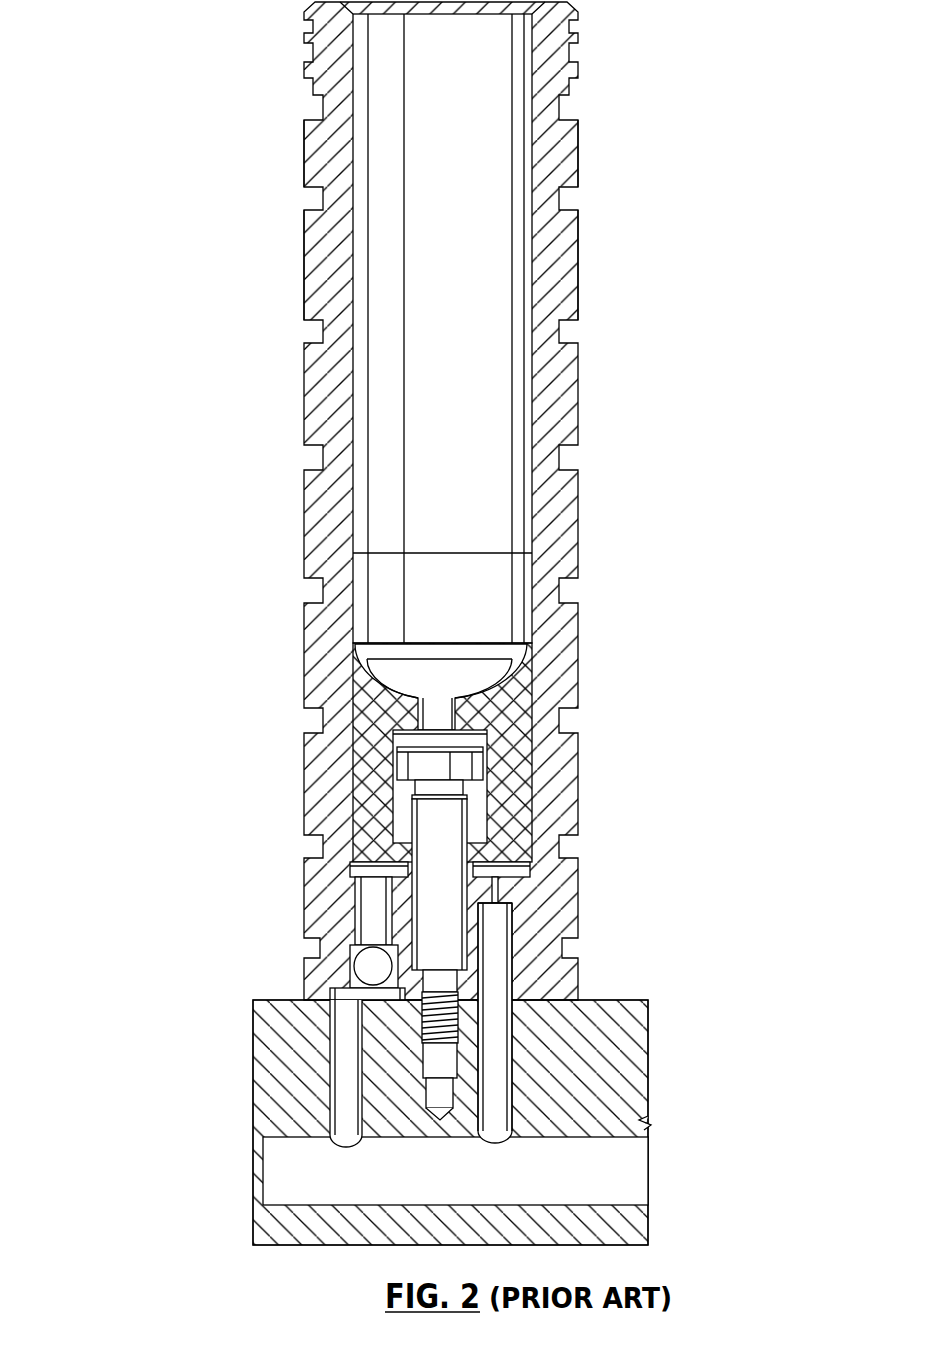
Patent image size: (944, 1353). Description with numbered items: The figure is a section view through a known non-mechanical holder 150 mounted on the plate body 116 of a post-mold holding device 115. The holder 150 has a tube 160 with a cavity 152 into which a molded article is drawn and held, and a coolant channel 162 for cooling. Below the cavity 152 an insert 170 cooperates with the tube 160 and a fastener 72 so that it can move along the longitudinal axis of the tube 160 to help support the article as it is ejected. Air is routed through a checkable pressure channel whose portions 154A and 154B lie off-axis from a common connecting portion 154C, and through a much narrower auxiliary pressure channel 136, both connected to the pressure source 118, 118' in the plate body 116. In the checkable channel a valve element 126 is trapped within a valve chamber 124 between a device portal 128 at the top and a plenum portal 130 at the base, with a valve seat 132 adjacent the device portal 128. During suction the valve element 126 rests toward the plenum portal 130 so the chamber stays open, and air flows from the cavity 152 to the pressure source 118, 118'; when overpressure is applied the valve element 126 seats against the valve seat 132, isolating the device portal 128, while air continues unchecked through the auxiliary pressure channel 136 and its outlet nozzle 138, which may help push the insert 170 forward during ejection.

The post-mold holding device 115 is at (172, 942).
The non-mechanical holder 150 is at (658, 206).
The tube 160 is at (565, 266).
The coolant channel 162 is at (567, 583).
The cavity 152 is at (459, 409).
The common connecting portion of the pressure channel 154C is at (470, 703).
The insert 170 is at (510, 727).
The portion of the pressure channel 154B is at (475, 793).
The fastener 72 is at (450, 822).
The portion of the pressure channel 154A is at (365, 893).
The device portal 128 is at (357, 930).
The valve seat 132 is at (363, 968).
The valve element 126 is at (347, 989).
The plenum portal 130 is at (342, 1022).
The valve chamber 124 is at (420, 1000).
The outlet nozzle 138 is at (500, 885).
The auxiliary pressure channel 136 is at (502, 940).
The plate body 116 is at (612, 1022).
The pressure source 118' is at (454, 1025).
The pressure source 118 is at (499, 1171).